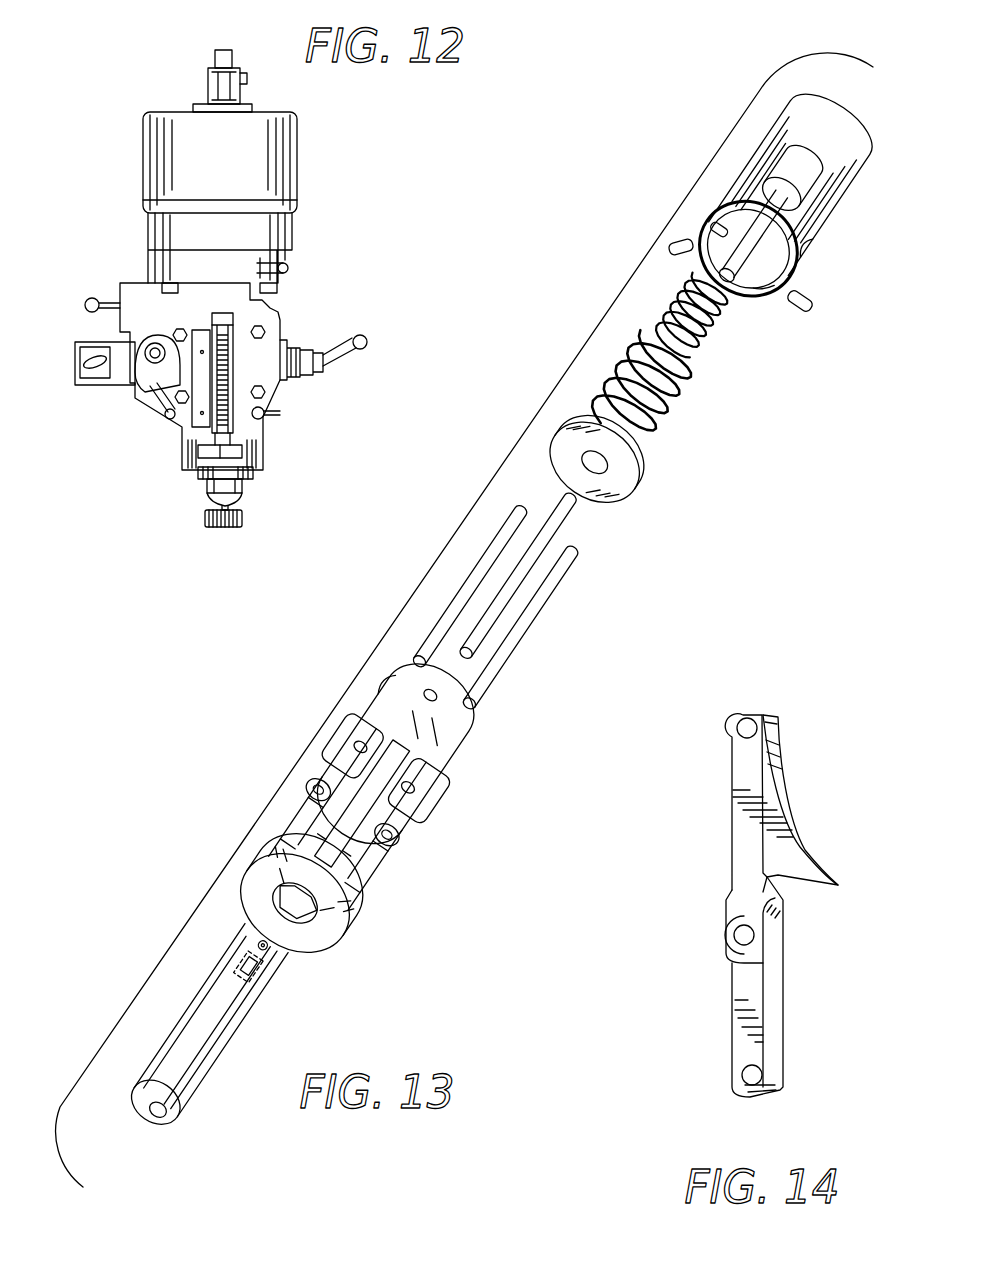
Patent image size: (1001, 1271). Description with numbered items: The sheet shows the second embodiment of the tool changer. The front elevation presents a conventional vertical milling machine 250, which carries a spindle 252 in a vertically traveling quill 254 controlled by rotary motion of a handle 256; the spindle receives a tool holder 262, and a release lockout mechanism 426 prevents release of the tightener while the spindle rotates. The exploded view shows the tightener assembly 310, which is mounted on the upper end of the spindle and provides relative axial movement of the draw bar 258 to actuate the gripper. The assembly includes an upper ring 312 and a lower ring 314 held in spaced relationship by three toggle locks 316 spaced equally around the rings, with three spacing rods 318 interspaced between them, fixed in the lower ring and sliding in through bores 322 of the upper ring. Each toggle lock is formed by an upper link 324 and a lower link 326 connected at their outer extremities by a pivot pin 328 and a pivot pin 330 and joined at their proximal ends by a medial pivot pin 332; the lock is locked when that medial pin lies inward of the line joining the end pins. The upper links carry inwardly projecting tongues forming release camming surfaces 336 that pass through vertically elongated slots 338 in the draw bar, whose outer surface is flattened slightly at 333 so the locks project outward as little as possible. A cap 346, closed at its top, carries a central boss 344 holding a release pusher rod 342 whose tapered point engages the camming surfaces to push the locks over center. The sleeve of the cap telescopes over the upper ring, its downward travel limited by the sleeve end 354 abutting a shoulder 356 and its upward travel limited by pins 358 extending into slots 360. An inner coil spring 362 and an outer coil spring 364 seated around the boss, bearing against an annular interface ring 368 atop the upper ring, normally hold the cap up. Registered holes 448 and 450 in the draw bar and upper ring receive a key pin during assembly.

In FIG. 12, the release lockout mechanism 426 is at (257, 86).
In FIG. 12, the vertical milling machine 250 is at (309, 190).
In FIG. 12, the handle 256 is at (335, 340).
In FIG. 12, the quill 254 is at (273, 468).
In FIG. 12, the spindle 252 is at (254, 492).
In FIG. 12, the tool holder 262 is at (250, 509).
In FIG. 13, the tightener assembly 310 is at (543, 637).
In FIG. 13, the cap 346 is at (838, 135).
In FIG. 13, the release pusher rod 342 is at (720, 264).
In FIG. 13, the boss 344 is at (790, 192).
In FIG. 13, the slots 360 is at (808, 251).
In FIG. 13, the end of the sleeve 354 is at (765, 290).
In FIG. 13, the pins 358 is at (680, 240).
In FIG. 13, the inner coil spring 362 is at (700, 345).
In FIG. 13, the outer coil spring 364 is at (655, 430).
In FIG. 13, the annular interface ring 368 is at (630, 485).
In FIG. 13, the spacing rods 318 is at (558, 508).
In FIG. 13, the upper ring 312 is at (455, 741).
In FIG. 13, the hole 450 is at (436, 697).
In FIG. 13, the shoulder 356 is at (398, 668).
In FIG. 13, the through bores 322 is at (356, 744).
In FIG. 13, the medial pivot pins 332 is at (316, 786).
In FIG. 14, the medial pivot pins 332 is at (738, 934).
In FIG. 13, the toggle locks 316 is at (415, 860).
In FIG. 13, the lower ring 314 is at (330, 920).
In FIG. 13, the hole 448 is at (333, 930).
In FIG. 13, the draw bar 258 is at (211, 1076).
In FIG. 13, the slots 338 is at (258, 945).
In FIG. 13, the flattened surface 333 is at (260, 972).
In FIG. 14, the upper links 324 is at (740, 826).
In FIG. 14, the pivot pin 328 is at (740, 722).
In FIG. 14, the release camming surfaces 336 is at (800, 842).
In FIG. 14, the lower links 326 is at (738, 995).
In FIG. 14, the pivot pin 330 is at (745, 1075).